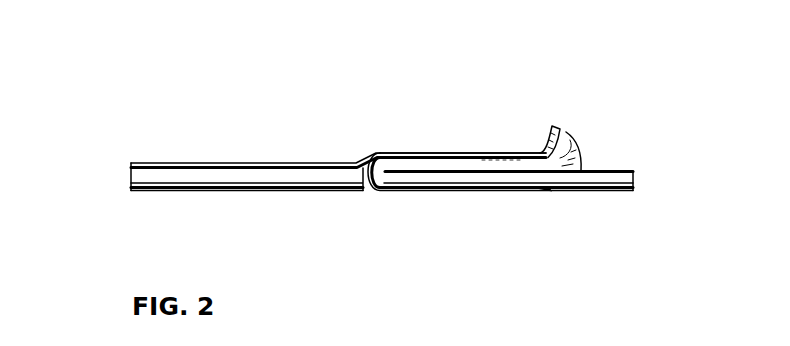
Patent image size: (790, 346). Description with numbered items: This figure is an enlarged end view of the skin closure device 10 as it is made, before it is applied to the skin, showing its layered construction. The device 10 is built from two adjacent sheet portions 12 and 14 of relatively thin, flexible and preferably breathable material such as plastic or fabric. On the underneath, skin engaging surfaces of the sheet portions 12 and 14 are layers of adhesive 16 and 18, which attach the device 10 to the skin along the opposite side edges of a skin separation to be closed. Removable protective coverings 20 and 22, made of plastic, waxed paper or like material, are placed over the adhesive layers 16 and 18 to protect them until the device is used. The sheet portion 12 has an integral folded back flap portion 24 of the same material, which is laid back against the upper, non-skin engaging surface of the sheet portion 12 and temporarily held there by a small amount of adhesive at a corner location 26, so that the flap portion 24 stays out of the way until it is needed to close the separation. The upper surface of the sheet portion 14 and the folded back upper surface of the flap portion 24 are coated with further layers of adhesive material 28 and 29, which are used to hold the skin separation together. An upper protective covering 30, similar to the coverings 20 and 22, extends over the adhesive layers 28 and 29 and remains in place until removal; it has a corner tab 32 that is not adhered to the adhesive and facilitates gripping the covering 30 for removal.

The skin closure device 10 is at (500, 70).
The sheet portion 12 is at (413, 177).
The sheet portion 14 is at (278, 172).
The layer of adhesive 16 is at (549, 191).
The layer of adhesive 18 is at (228, 186).
The removable protective covering 20 is at (498, 193).
The removable protective covering 22 is at (147, 189).
The folded back flap portion 24 is at (489, 163).
The adhesive location 26 is at (583, 160).
The layer of adhesive material 28 is at (143, 168).
The layer of adhesive material 29 is at (455, 159).
The upper protective covering 30 is at (170, 167).
The corner tab 32 is at (556, 131).